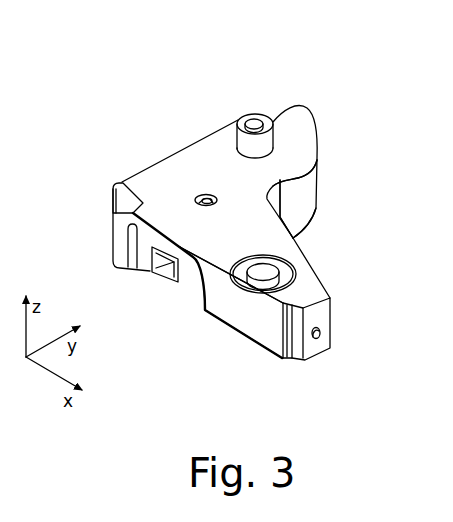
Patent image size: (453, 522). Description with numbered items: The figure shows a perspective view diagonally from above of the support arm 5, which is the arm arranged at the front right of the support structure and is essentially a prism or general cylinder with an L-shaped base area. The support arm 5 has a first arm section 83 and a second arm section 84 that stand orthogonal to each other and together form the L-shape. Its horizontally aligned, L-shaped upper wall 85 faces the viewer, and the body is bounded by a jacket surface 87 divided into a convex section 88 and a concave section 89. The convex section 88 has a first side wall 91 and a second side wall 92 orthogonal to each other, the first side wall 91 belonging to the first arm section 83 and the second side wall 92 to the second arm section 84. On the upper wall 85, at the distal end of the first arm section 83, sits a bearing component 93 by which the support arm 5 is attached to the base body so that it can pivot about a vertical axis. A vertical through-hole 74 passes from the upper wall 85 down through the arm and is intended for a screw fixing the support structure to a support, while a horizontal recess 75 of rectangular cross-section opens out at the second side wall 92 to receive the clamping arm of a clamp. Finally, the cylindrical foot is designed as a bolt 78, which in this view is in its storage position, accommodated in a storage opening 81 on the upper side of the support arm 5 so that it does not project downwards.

The support arm 5 is at (197, 164).
The through-hole 74 is at (205, 198).
The recess 75 is at (147, 278).
The bolt 78 is at (263, 282).
The storage opening 81 is at (233, 328).
The first arm section 83 is at (141, 166).
The second arm section 84 is at (321, 260).
The upper wall 85 is at (292, 153).
The jacket surface 87 is at (300, 197).
The convex section 88 is at (243, 271).
The concave section 89 is at (346, 199).
The first side wall 91 is at (256, 92).
The second side wall 92 is at (191, 290).
The bearing component 93 is at (254, 121).